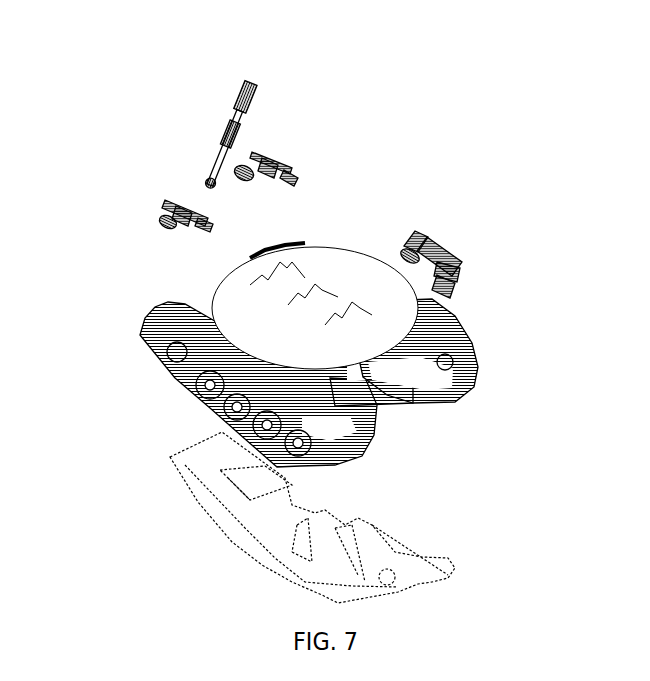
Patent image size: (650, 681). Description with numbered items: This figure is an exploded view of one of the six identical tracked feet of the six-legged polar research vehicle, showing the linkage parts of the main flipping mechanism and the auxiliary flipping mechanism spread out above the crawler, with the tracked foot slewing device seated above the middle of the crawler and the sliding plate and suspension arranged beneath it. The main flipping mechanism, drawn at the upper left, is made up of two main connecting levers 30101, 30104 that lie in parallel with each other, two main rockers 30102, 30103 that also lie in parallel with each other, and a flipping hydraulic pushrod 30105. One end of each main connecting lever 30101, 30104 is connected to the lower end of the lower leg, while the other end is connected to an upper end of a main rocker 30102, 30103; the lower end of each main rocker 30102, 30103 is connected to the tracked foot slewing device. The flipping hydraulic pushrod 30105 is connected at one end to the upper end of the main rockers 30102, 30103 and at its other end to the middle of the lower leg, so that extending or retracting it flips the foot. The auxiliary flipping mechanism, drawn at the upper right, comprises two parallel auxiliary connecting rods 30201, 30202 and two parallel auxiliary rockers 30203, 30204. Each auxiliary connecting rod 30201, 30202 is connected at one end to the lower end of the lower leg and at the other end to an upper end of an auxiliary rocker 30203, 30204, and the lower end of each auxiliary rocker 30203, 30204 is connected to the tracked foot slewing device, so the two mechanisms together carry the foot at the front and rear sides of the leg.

The main connecting lever 30101 is at (183, 222).
The main rocker 30102 is at (166, 200).
The main rocker 30103 is at (253, 157).
The main connecting lever 30104 is at (283, 170).
The flipping hydraulic pushrod 30105 is at (233, 120).
The auxiliary connecting rod 30201 is at (430, 237).
The auxiliary connecting rod 30202 is at (452, 237).
The auxiliary rocker 30203 is at (462, 253).
The auxiliary rocker 30204 is at (462, 279).